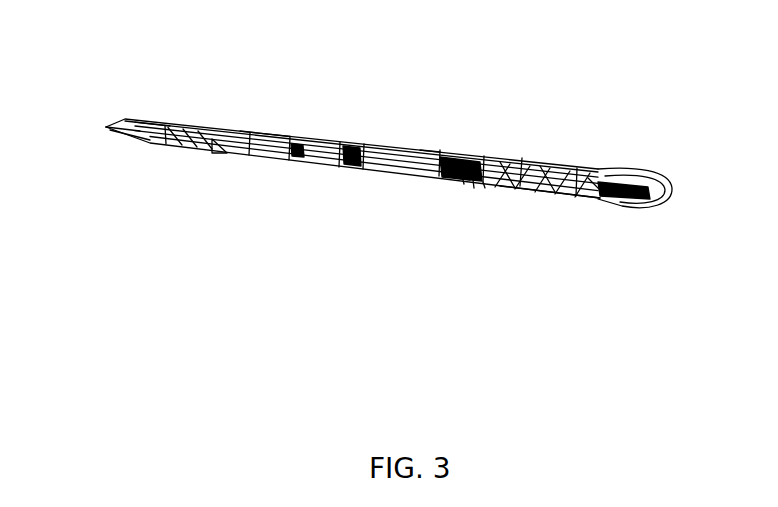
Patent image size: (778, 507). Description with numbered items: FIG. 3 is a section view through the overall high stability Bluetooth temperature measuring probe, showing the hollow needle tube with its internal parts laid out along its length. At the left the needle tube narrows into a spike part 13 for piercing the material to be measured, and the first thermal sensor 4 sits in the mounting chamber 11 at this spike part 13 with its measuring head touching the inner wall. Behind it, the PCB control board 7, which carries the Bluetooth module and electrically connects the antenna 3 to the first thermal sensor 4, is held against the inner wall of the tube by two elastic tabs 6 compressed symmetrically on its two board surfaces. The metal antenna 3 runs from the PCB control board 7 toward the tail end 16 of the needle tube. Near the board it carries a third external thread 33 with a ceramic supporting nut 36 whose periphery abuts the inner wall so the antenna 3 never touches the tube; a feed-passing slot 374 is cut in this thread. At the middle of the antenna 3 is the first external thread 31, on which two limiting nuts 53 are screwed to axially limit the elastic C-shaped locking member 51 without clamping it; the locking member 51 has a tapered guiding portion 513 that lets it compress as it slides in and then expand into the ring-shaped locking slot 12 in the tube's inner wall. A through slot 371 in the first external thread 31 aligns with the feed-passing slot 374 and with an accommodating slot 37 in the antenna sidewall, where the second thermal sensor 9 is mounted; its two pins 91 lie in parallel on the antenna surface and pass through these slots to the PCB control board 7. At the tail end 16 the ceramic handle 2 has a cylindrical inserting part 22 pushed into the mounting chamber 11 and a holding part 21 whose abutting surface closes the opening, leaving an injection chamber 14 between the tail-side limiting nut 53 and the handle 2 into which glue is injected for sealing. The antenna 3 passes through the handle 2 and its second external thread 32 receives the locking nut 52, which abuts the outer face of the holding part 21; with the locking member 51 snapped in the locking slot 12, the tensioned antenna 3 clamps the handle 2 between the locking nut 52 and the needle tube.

The handle 2 is at (108, 116).
The antenna 3 is at (519, 82).
The first thermal sensor 4 is at (153, 121).
The elastic tab 6 is at (287, 150).
The PCB control board 7 is at (262, 130).
The second thermal sensor 9 is at (591, 193).
The mounting chamber 11 is at (227, 156).
The locking slot 12 is at (457, 182).
The spike part 13 is at (114, 146).
The injection chamber 14 is at (483, 190).
The tail end 16 is at (534, 192).
The holding part 21 is at (577, 195).
The inserting part 22 is at (522, 158).
The first external thread 31 is at (463, 182).
The second external thread 32 is at (641, 165).
The third external thread 33 is at (354, 172).
The supporting nut 36 is at (356, 144).
The accommodating slot 37 is at (347, 145).
The locking member 51 is at (466, 157).
The locking nut 52 is at (661, 187).
The limiting nut 53 is at (473, 190).
The pin 91 is at (430, 157).
The through slot 371 is at (447, 157).
The feed-passing slot 374 is at (347, 172).
The guiding portion 513 is at (457, 157).